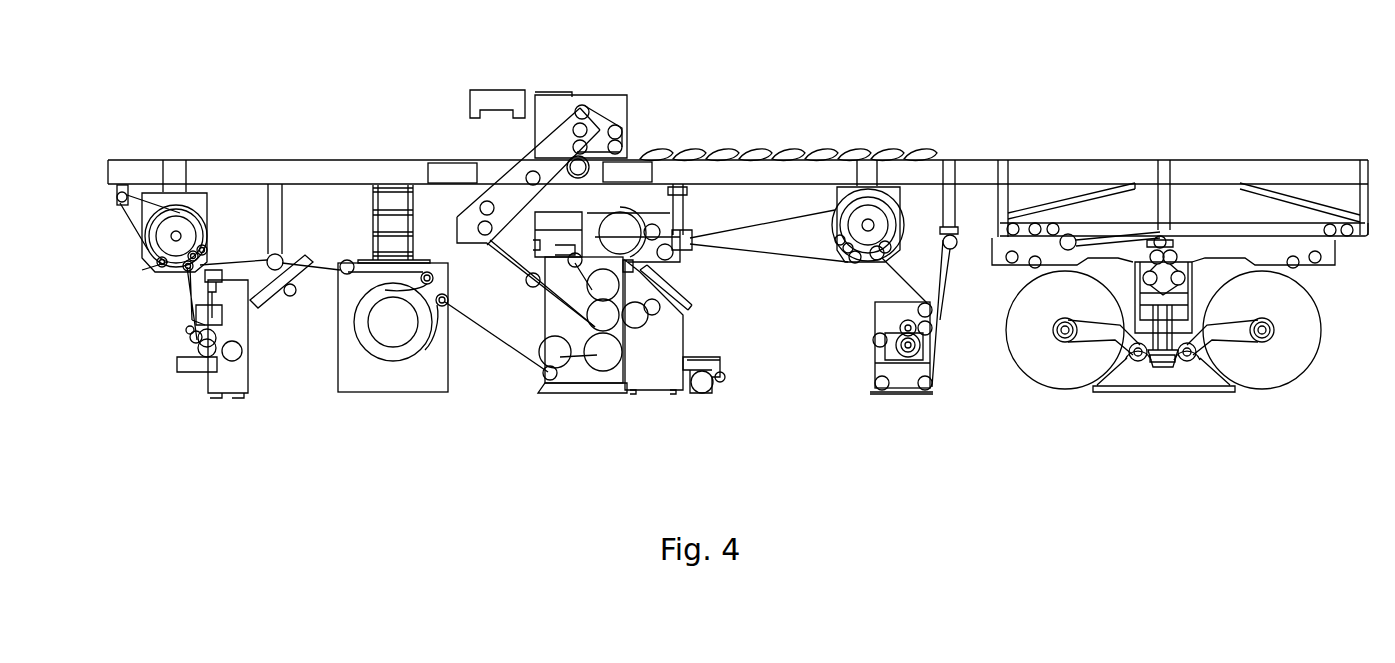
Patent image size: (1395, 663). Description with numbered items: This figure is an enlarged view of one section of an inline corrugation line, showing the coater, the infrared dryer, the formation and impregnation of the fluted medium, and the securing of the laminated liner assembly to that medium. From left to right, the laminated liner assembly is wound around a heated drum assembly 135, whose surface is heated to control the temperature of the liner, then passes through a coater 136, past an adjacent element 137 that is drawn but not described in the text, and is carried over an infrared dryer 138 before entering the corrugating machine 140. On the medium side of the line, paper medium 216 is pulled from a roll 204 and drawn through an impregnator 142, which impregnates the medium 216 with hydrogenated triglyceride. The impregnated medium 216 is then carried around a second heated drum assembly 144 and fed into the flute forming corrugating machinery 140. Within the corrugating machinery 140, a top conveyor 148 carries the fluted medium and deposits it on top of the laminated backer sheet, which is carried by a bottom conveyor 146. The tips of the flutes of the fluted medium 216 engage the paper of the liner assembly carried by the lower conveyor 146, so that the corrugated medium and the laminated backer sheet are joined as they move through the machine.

The heated drum assembly 135 is at (180, 192).
The coater 136 is at (230, 392).
The transfer plate 137 is at (282, 300).
The infrared dryer 138 is at (396, 385).
The corrugating machine 140 is at (594, 392).
The impregnator 142 is at (921, 395).
The heated drum assembly 144 is at (893, 185).
The bottom conveyor 146 is at (598, 140).
The top conveyor 148 is at (553, 140).
The paper medium 216 is at (730, 153).
The roll 204 is at (1080, 377).